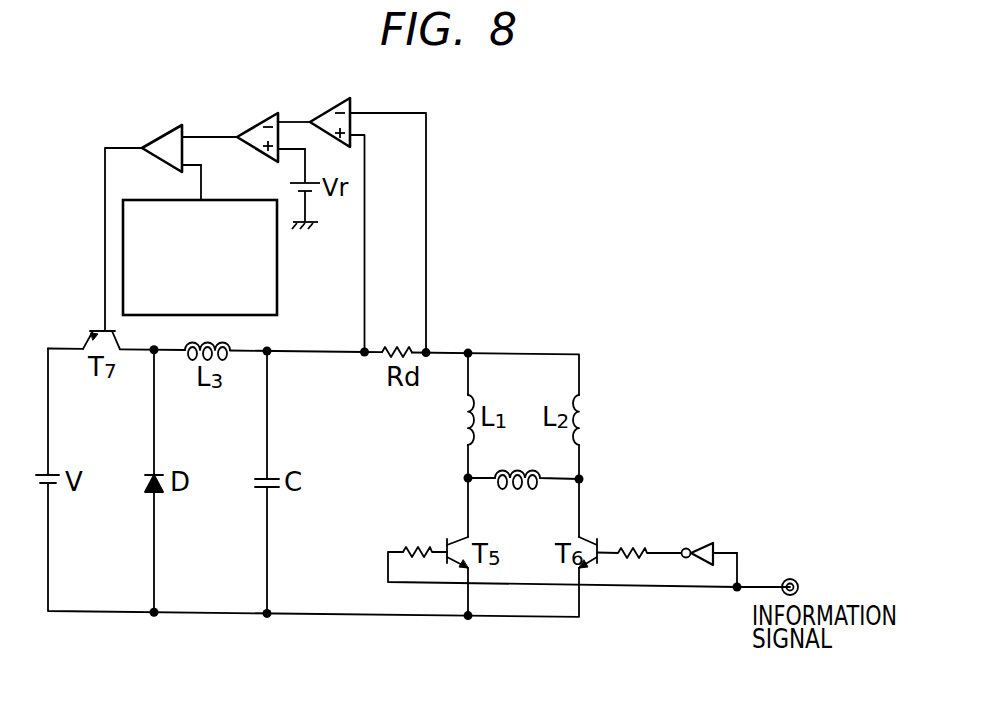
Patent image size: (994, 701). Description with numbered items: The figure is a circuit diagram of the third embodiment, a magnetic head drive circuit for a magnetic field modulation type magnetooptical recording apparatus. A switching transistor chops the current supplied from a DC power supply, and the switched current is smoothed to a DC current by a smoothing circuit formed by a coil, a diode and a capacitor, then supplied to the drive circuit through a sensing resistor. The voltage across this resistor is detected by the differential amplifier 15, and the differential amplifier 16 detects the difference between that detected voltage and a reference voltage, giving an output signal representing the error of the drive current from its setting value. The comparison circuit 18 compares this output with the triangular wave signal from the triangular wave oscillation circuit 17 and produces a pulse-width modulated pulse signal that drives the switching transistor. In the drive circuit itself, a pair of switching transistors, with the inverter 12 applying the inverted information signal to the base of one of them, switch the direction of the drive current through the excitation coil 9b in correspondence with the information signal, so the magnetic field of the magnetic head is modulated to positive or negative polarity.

The comparison circuit 18 is at (160, 137).
The differential amplifier 16 is at (265, 120).
The differential amplifier 15 is at (330, 108).
The triangular wave oscillation circuit 17 is at (277, 265).
The excitation coil 9b is at (519, 490).
The inverter 12 is at (703, 546).